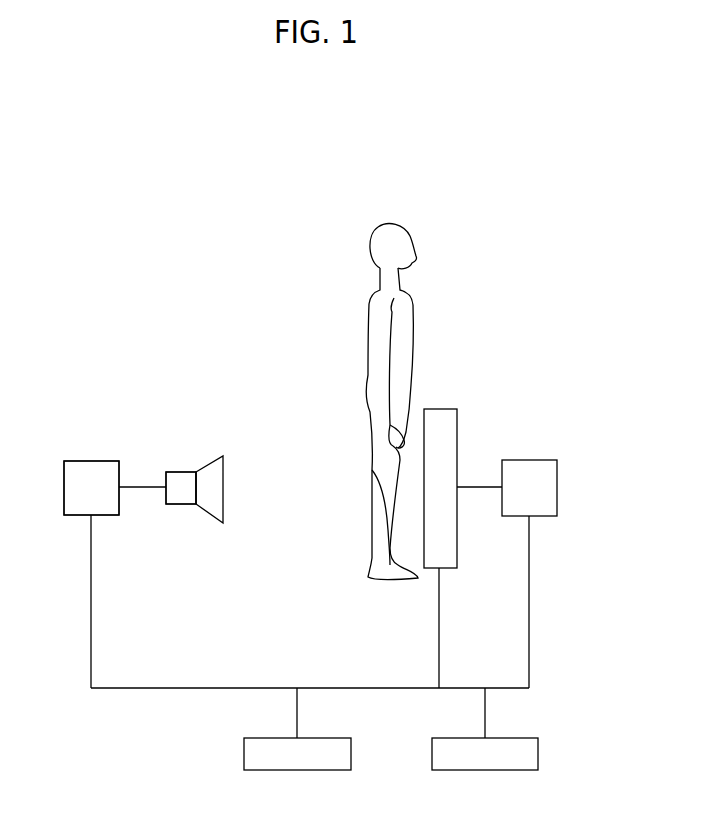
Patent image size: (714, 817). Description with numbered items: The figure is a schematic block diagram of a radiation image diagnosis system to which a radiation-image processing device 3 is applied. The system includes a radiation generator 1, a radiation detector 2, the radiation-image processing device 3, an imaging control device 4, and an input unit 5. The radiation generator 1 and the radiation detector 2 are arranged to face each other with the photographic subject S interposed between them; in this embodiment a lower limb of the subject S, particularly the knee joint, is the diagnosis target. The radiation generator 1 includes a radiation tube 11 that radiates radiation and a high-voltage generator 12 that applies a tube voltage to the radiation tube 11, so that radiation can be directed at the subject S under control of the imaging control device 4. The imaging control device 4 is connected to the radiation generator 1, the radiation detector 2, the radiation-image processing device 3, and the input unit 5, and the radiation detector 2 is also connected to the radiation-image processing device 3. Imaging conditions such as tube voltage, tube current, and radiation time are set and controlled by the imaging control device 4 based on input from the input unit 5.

The radiation generator 1 is at (215, 405).
The radiation tube 11 is at (183, 472).
The high-voltage generator 12 is at (90, 461).
The radiation detector 2 is at (439, 409).
The radiation-image processing device 3 is at (529, 460).
The imaging control device 4 is at (244, 755).
The input unit 5 is at (538, 755).
The photographic subject S is at (392, 221).